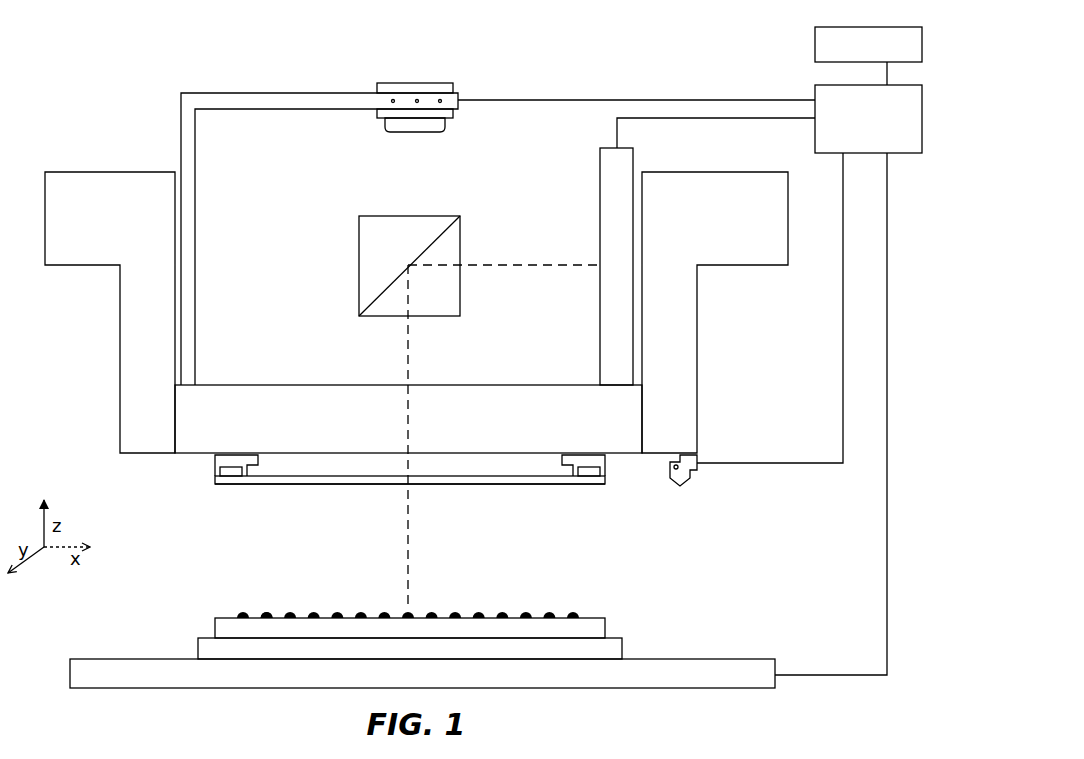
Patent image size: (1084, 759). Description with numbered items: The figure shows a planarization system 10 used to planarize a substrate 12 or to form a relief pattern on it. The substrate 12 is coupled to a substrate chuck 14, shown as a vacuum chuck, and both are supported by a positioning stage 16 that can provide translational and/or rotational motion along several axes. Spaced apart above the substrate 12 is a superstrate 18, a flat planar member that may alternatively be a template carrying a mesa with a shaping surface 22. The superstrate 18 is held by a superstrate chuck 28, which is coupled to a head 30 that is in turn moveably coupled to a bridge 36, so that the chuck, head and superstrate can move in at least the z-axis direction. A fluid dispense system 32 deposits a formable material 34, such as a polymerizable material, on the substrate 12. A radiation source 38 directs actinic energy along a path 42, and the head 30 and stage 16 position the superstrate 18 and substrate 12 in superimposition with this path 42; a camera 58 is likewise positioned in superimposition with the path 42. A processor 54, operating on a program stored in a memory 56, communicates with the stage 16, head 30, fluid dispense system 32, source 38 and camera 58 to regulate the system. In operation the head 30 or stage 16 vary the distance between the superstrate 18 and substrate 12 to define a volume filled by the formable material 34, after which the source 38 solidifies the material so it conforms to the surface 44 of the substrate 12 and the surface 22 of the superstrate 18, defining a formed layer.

The planarization system 10 is at (102, 80).
The substrate 12 is at (215, 621).
The substrate chuck 14 is at (198, 652).
The positioning stage 16 is at (725, 659).
The superstrate 18 is at (272, 486).
The shaping surface 22 is at (605, 481).
The superstrate chuck 28 is at (213, 468).
The head 30 is at (183, 455).
The fluid dispense system 32 is at (683, 472).
The formable material 34 is at (385, 611).
The bridge 36 is at (105, 172).
The radiation source 38 is at (600, 168).
The path 42 is at (408, 384).
The surface 44 is at (278, 611).
The processor 54 is at (855, 132).
The memory 56 is at (855, 55).
The camera 58 is at (392, 83).